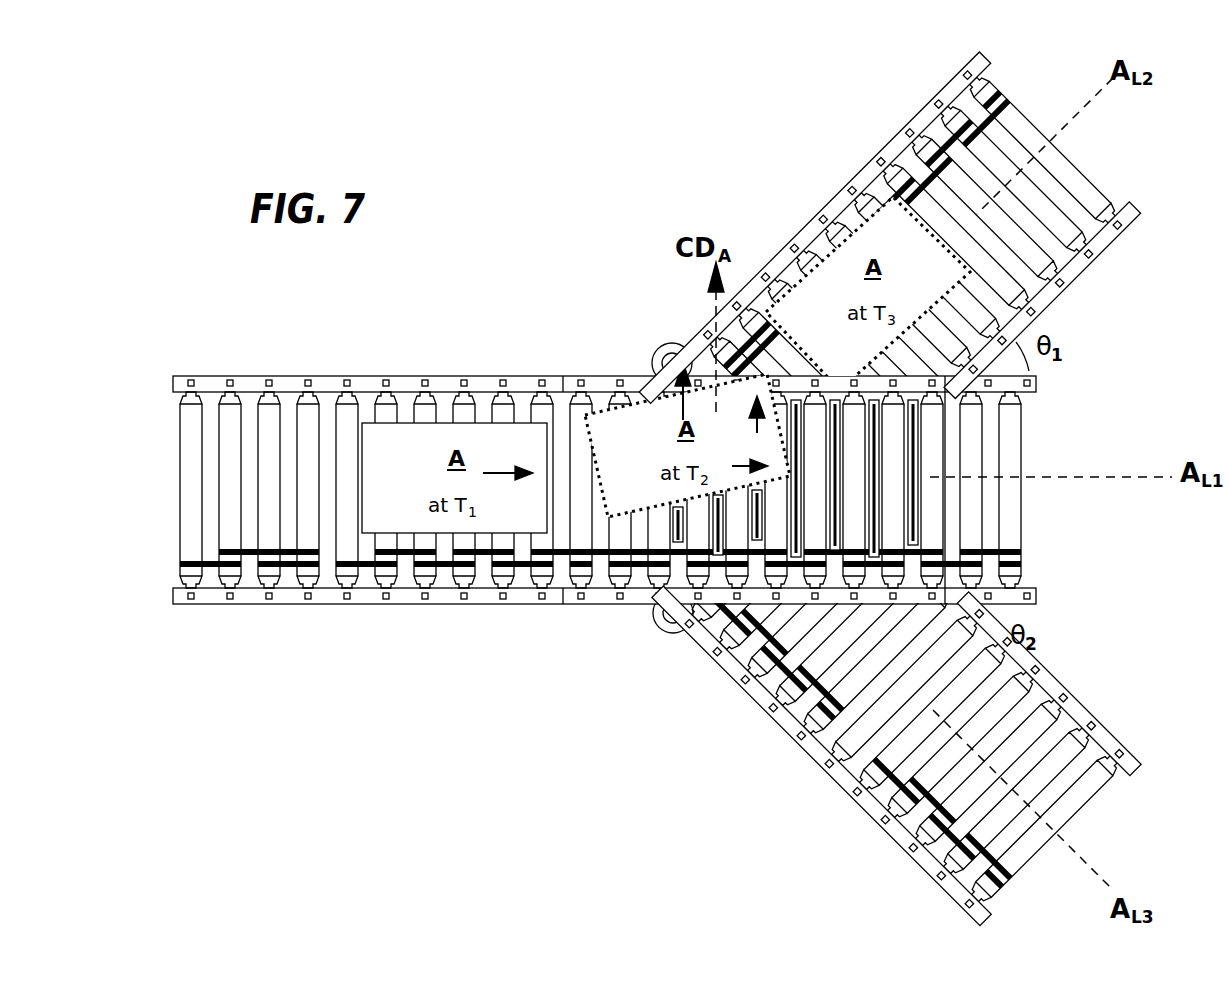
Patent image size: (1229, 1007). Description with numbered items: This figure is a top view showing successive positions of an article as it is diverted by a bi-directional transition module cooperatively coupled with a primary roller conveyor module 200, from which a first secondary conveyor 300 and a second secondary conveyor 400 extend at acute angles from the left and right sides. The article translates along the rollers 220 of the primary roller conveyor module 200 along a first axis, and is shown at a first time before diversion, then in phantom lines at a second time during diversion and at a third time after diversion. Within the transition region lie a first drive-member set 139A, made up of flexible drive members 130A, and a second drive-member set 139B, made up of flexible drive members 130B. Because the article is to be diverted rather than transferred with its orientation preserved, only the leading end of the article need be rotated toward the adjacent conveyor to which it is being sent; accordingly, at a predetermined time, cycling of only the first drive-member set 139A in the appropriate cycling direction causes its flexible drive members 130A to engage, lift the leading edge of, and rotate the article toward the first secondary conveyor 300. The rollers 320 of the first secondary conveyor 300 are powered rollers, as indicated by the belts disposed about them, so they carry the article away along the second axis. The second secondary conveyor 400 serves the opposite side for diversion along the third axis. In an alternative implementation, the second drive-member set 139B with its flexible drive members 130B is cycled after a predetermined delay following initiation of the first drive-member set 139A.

The primary roller conveyor module 200 is at (604, 450).
The rollers of the primary roller conveyor 220 is at (308, 388).
The first secondary conveyor 300 is at (889, 302).
The rollers of the secondary conveyor 320 is at (883, 308).
The second secondary conveyor 400 is at (810, 740).
The flexible drive members of the first drive-member set 130A is at (754, 528).
The first drive-member set 139A is at (652, 593).
The flexible drive members of the second drive-member set 130B is at (993, 593).
The second drive-member set 139B is at (963, 549).